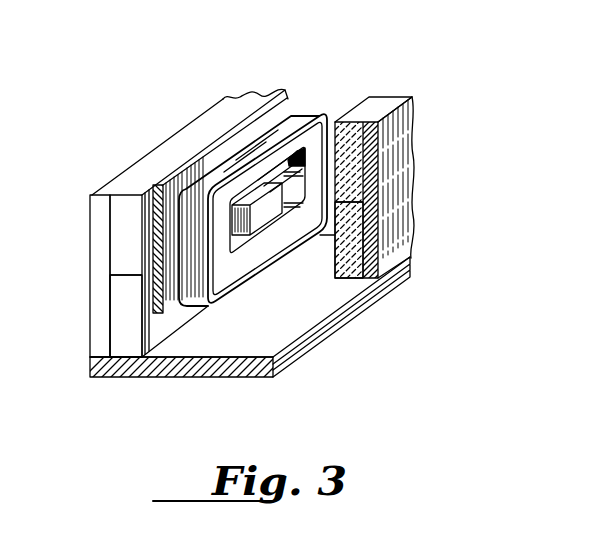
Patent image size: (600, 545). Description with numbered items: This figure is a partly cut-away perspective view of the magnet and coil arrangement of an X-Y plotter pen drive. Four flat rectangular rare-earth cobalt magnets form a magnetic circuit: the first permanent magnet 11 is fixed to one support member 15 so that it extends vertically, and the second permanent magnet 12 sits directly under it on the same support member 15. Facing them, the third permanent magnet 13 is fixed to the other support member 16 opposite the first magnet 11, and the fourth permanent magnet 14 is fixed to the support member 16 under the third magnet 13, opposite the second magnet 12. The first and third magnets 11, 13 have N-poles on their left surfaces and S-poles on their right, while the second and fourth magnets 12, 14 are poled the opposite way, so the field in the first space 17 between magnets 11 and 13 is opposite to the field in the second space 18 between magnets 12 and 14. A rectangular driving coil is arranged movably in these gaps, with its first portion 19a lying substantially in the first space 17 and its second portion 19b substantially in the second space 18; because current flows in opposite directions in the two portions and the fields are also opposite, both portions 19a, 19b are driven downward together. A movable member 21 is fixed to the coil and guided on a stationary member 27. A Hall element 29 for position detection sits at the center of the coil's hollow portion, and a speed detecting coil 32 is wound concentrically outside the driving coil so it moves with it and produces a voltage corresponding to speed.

The first permanent magnet 11 is at (371, 105).
The second permanent magnet 12 is at (352, 264).
The third permanent magnet 13 is at (122, 206).
The fourth permanent magnet 14 is at (127, 340).
The support member 15 is at (398, 182).
The support member 16 is at (105, 256).
The first space 17 is at (322, 104).
The second space 18 is at (192, 336).
The first portion of driving coil 19a is at (282, 158).
The second portion of driving coil 19b is at (277, 240).
The movable member 21 is at (175, 183).
The stationary member 27 is at (235, 367).
The Hall element 29 is at (257, 218).
The speed detecting coil 32 is at (236, 155).